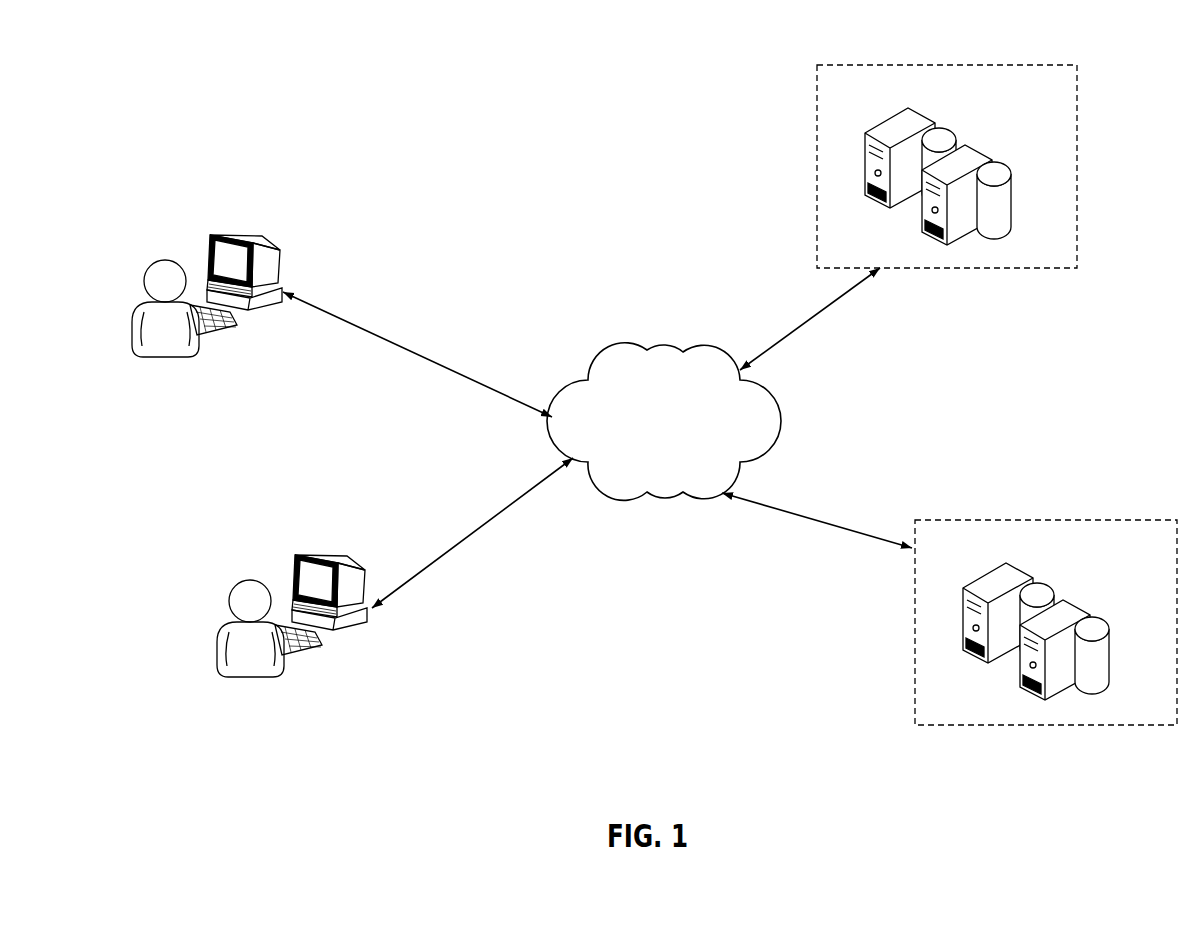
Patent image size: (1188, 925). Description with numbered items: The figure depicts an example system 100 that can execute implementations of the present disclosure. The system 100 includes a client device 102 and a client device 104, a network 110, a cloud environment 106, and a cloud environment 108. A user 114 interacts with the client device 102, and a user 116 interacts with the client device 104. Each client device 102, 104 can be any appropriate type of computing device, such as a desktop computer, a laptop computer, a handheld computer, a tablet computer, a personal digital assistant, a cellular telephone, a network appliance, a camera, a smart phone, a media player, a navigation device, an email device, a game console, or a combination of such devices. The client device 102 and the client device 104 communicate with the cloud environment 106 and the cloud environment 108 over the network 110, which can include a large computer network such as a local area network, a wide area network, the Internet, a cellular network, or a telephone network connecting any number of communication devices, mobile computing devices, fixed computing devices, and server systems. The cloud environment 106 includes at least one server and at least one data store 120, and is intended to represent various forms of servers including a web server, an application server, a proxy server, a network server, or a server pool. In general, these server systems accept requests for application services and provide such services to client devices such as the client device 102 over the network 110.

The system 100 is at (222, 68).
The client device 102 is at (227, 232).
The client device 104 is at (314, 552).
The cloud environment 106 is at (947, 151).
The cloud environment 108 is at (980, 520).
The network 110 is at (630, 345).
The user 114 is at (157, 358).
The user 116 is at (247, 678).
The data store 120 is at (953, 128).